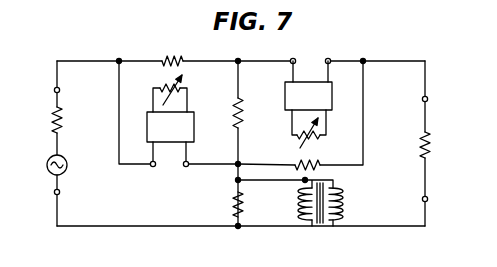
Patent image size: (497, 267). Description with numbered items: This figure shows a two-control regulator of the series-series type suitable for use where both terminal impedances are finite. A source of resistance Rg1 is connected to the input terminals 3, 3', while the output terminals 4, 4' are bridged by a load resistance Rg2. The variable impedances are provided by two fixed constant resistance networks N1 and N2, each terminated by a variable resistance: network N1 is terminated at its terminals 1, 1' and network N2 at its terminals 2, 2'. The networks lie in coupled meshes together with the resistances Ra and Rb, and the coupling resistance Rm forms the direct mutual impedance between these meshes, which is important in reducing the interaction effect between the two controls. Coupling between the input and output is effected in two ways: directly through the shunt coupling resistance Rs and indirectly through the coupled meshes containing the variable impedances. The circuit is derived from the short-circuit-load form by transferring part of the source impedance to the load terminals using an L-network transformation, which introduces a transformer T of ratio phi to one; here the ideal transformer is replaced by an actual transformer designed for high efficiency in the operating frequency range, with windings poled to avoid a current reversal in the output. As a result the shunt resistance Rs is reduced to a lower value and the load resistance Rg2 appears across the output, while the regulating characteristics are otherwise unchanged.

The terminal of network N1 1 is at (154, 171).
The terminal of network N1 1' is at (188, 171).
The terminal of network N2 2 is at (293, 53).
The terminal of network N2 2' is at (329, 53).
The input terminal 3 is at (51, 90).
The input terminal 3' is at (49, 192).
The output terminal 4 is at (430, 99).
The output terminal 4' is at (431, 199).
The resistance Ra is at (172, 52).
The resistance Rb is at (300, 115).
The coupling resistance Rm is at (251, 113).
The shunt coupling resistance Rs is at (215, 204).
The source resistance Rg1 is at (41, 120).
The load resistance Rg2 is at (440, 145).
The fixed constant resistance network N1 is at (170, 119).
The fixed constant resistance network N2 is at (308, 104).
The transformer T is at (298, 214).